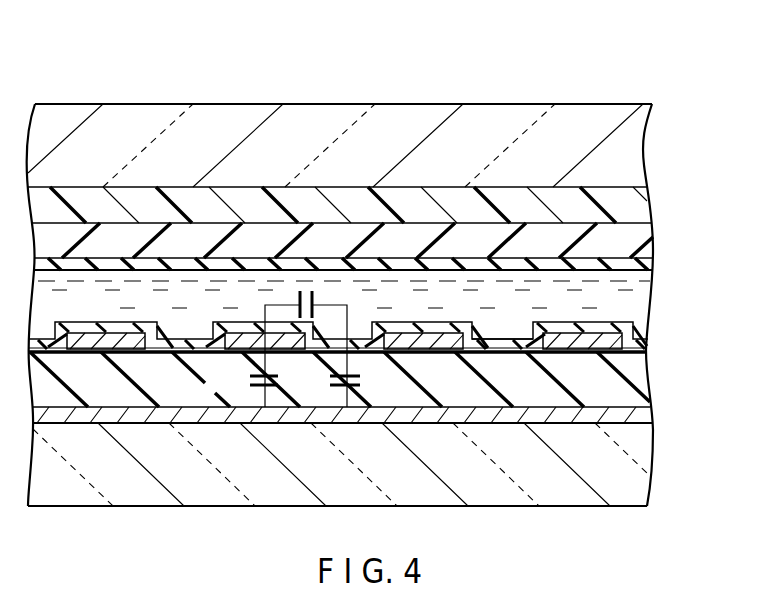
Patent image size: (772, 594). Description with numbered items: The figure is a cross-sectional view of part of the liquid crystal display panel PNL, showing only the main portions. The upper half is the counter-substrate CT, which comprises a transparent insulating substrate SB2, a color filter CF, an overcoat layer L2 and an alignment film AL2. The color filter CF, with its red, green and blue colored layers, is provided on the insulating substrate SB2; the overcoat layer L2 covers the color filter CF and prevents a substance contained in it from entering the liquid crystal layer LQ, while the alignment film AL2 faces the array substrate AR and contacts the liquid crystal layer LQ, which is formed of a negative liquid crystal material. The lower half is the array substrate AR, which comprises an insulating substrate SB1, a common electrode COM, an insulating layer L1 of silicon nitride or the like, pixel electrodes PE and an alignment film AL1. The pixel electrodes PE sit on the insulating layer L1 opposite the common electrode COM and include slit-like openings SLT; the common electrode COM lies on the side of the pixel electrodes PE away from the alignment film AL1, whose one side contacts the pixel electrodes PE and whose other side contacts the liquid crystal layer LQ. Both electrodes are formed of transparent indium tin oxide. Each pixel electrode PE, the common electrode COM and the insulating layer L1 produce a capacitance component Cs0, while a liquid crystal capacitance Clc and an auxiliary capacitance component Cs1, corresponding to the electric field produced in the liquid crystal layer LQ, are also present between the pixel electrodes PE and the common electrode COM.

The liquid crystal display panel PNL is at (658, 94).
The counter-substrate CT is at (393, 191).
The transparent insulating substrate SB2 is at (630, 154).
The color filter CF is at (636, 202).
The overcoat layer L2 is at (640, 237).
The alignment film AL2 is at (373, 268).
The liquid crystal layer LQ is at (635, 303).
The array substrate AR is at (396, 398).
The alignment film AL1 is at (637, 347).
The pixel electrode PE is at (104, 331).
The slit-like opening SLT is at (468, 347).
The insulating layer L1 is at (640, 385).
The common electrode COM is at (640, 418).
The insulating substrate SB1 is at (373, 464).
The liquid crystal capacitance Clc is at (306, 345).
The capacitance component Cs0 is at (245, 382).
The auxiliary capacitance component Cs1 is at (363, 382).